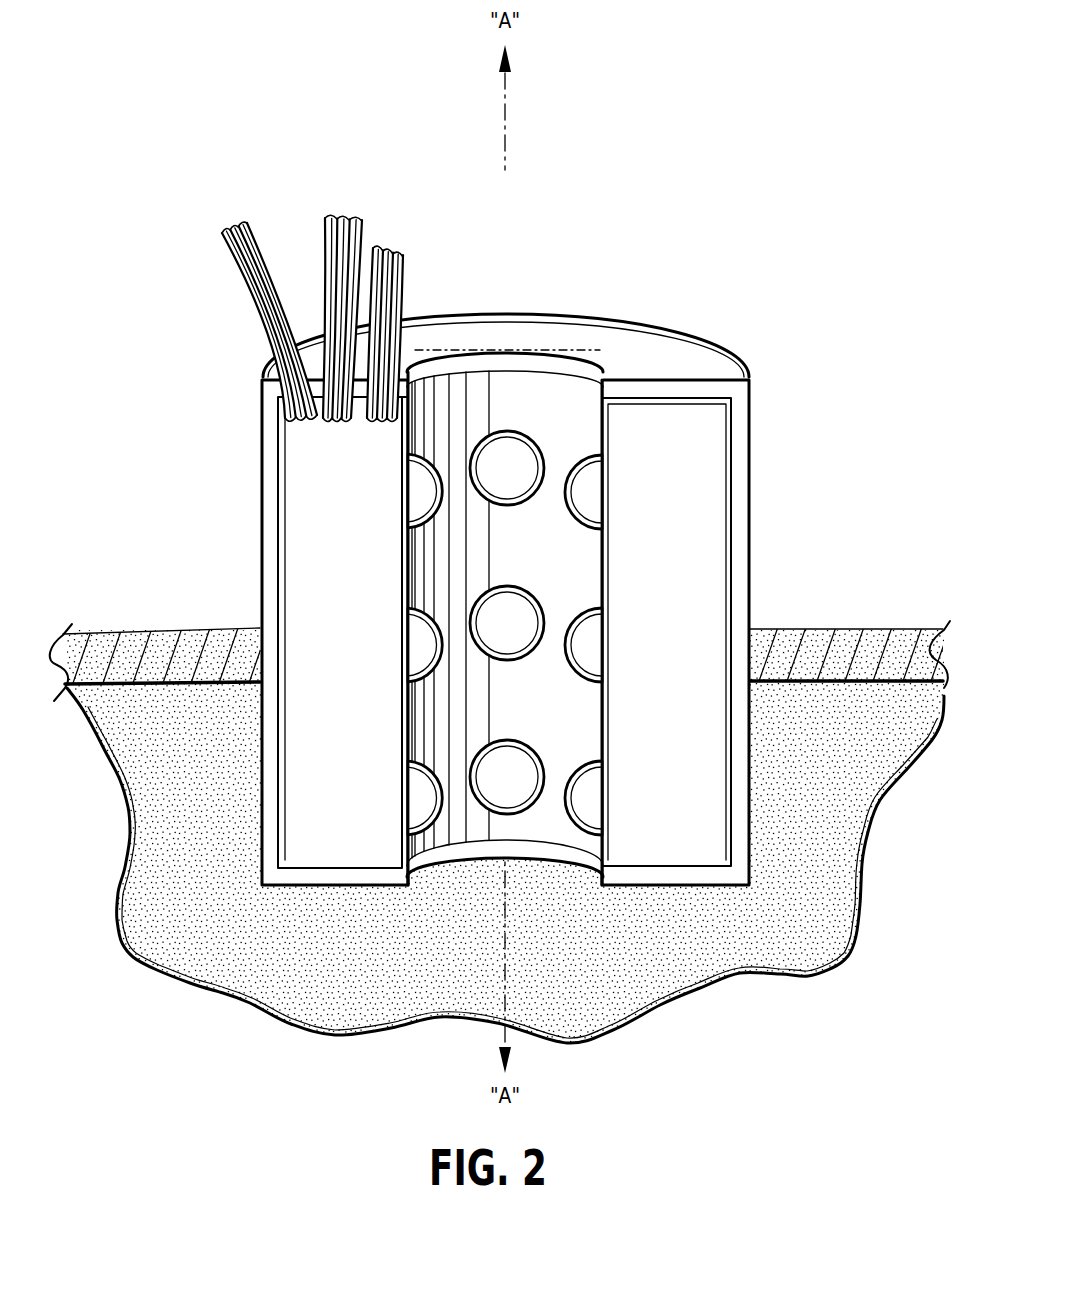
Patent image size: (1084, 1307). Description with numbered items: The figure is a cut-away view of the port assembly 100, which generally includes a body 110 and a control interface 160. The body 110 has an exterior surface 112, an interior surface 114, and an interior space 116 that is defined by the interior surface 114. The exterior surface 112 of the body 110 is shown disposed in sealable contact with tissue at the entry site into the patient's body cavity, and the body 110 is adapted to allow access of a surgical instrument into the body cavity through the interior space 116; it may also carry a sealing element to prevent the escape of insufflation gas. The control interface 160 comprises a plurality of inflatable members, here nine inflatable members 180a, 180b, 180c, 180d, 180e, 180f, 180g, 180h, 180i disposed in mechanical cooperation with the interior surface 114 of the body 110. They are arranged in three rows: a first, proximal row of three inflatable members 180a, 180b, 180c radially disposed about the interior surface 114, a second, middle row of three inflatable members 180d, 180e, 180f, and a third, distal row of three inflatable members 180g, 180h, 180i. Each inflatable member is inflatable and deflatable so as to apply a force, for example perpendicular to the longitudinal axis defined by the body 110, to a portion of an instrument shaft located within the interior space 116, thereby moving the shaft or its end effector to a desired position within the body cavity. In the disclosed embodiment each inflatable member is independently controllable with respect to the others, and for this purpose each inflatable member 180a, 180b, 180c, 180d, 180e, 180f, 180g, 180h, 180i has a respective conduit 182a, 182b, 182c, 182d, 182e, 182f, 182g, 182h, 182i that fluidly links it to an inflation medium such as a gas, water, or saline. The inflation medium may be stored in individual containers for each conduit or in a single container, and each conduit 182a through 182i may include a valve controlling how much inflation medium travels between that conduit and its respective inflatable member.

The port assembly 100 is at (458, 600).
The body 110 is at (497, 584).
The exterior surface 112 is at (270, 515).
The interior surface 114 is at (410, 408).
The interior space 116 is at (499, 455).
The control interface 160 is at (594, 472).
The inflatable member 180a is at (420, 487).
The inflatable member 180b is at (528, 377).
The inflatable member 180c is at (598, 497).
The inflatable member 180d is at (418, 640).
The inflatable member 180e is at (512, 622).
The inflatable member 180f is at (600, 640).
The inflatable member 180g is at (410, 803).
The inflatable member 180h is at (500, 785).
The inflatable member 180i is at (597, 797).
The conduit 182a is at (222, 238).
The conduit 182b is at (235, 224).
The conduit 182c is at (245, 222).
The conduit 182d is at (328, 218).
The conduit 182e is at (341, 220).
The conduit 182f is at (350, 222).
The conduit 182g is at (383, 251).
The conduit 182h is at (390, 254).
The conduit 182i is at (402, 258).